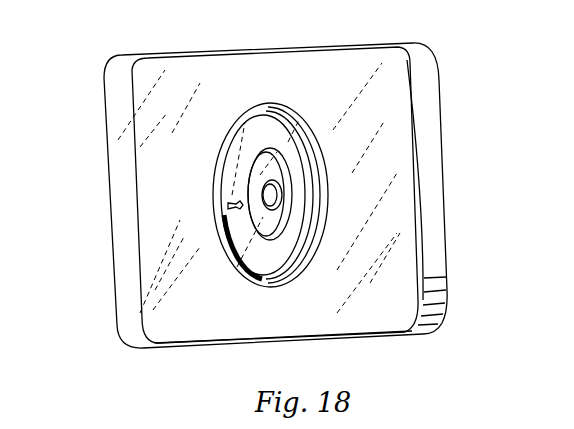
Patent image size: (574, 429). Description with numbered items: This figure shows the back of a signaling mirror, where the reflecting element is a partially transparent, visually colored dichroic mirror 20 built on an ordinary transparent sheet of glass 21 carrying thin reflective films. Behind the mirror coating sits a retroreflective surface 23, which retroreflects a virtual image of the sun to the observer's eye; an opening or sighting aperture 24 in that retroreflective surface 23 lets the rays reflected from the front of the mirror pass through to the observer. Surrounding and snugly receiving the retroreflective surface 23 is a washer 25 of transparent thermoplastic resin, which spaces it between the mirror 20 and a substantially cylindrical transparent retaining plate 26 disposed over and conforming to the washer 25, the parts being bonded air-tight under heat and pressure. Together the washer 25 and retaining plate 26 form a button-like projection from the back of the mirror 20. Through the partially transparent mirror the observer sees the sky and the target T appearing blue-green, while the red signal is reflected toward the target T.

The dichroic mirror 20 is at (442, 140).
The transparent sheet of glass 21 is at (270, 50).
The washer 25 is at (330, 215).
The retaining plate 26 is at (212, 175).
The retroreflective surface 23 is at (258, 214).
The sighting aperture 24 is at (271, 211).
The target T is at (226, 207).